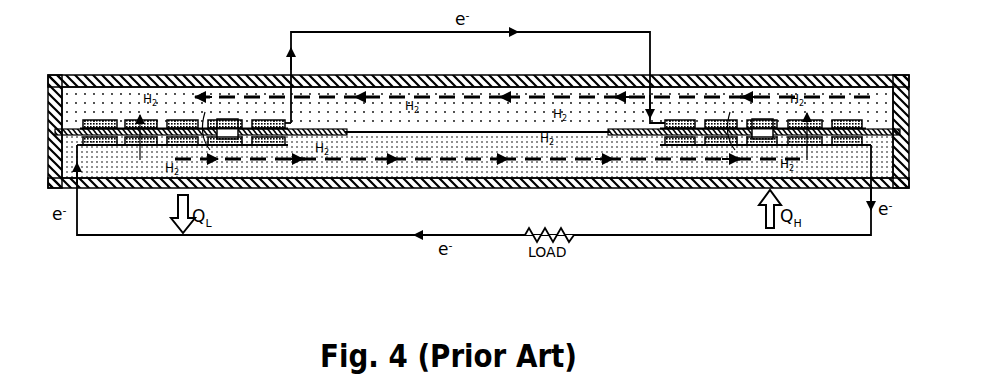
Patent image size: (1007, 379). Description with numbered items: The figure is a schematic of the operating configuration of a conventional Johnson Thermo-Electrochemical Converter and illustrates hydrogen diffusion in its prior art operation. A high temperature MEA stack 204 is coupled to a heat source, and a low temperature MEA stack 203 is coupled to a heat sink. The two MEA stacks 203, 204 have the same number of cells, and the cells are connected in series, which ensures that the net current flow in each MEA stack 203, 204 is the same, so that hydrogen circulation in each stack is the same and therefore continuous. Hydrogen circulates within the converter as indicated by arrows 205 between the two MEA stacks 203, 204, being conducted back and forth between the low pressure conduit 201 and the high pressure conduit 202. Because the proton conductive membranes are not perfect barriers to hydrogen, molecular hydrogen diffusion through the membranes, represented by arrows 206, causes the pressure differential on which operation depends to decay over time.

The low pressure conduit 201 is at (258, 92).
The high pressure conduit 202 is at (680, 172).
The low temperature MEA stack 203 is at (104, 120).
The high temperature MEA stack 204 is at (850, 124).
The arrows indicating hydrogen circulation 205 is at (440, 98).
The arrows representing molecular hydrogen diffusion 206 is at (810, 112).